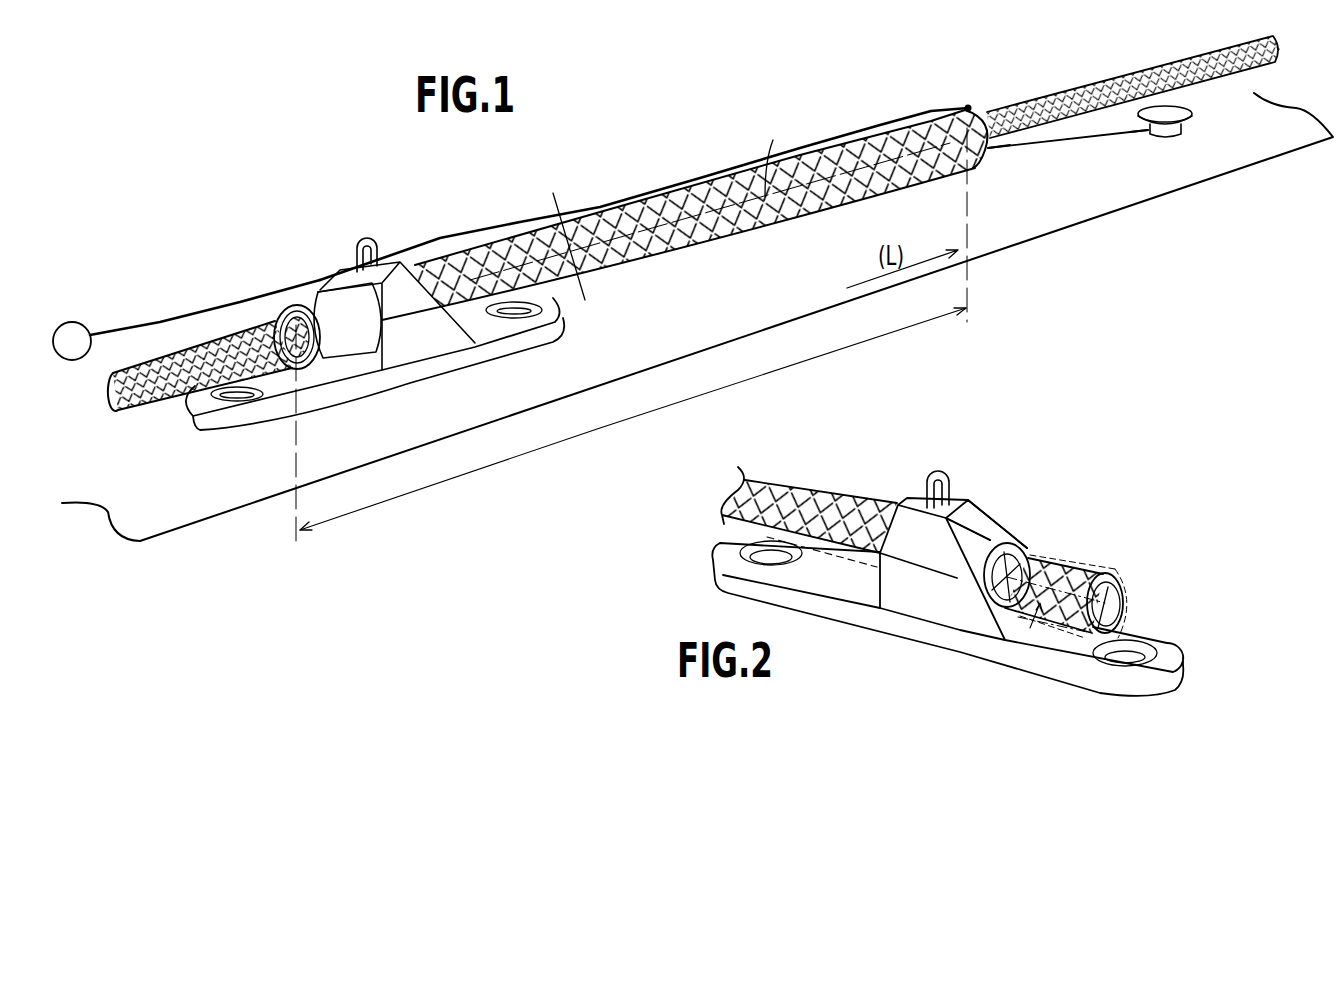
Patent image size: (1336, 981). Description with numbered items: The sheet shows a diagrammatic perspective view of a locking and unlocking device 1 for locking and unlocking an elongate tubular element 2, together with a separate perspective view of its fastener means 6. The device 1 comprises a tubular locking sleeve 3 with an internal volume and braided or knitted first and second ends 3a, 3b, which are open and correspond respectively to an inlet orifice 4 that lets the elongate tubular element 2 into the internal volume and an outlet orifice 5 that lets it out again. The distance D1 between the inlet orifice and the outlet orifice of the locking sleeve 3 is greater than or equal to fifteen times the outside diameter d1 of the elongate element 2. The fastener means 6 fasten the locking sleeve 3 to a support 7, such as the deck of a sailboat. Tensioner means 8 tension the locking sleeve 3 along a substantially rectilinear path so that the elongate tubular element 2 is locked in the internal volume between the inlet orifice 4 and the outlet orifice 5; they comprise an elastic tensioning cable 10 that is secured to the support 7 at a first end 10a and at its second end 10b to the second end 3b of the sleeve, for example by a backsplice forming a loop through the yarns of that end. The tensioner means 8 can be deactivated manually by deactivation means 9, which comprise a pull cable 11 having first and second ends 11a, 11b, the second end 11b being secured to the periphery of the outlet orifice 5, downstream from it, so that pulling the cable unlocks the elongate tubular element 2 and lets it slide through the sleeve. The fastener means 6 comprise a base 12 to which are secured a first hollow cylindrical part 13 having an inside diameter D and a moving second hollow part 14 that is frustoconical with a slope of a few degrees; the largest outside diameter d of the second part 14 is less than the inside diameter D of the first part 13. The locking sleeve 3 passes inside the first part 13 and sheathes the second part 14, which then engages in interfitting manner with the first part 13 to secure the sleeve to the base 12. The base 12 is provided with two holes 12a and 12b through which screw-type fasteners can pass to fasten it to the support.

In FIG. 1, the locking and unlocking device 1 is at (190, 452).
In FIG. 1, the elongate tubular element 2 is at (157, 400).
In FIG. 2, the elongate tubular element 2 is at (813, 479).
In FIG. 1, the tubular locking sleeve 3 is at (745, 218).
In FIG. 1, the first end of the locking sleeve 3a is at (270, 313).
In FIG. 1, the second end of the locking sleeve 3b is at (978, 135).
In FIG. 1, the inlet orifice 4 is at (403, 295).
In FIG. 1, the outlet orifice 5 is at (1022, 118).
In FIG. 1, the fastener means 6 is at (403, 345).
In FIG. 2, the fastener means 6 is at (944, 551).
In FIG. 1, the support 7 is at (821, 267).
In FIG. 1, the tensioner means 8 is at (1138, 135).
In FIG. 1, the deactivation means 9 is at (223, 302).
In FIG. 1, the elastic tensioning cable 10 is at (1100, 134).
In FIG. 1, the first end of the tensioning cable 10a is at (1195, 118).
In FIG. 1, the second end of the tensioning cable 10b is at (992, 150).
In FIG. 1, the pull cable 11 is at (503, 224).
In FIG. 1, the first end of the pull cable 11a is at (75, 340).
In FIG. 1, the second end of the pull cable 11b is at (968, 105).
In FIG. 2, the base 12 is at (933, 613).
In FIG. 2, the first hole 12a is at (748, 548).
In FIG. 2, the second hole 12b is at (1127, 650).
In FIG. 2, the first hollow cylindrical part 13 is at (993, 538).
In FIG. 2, the moving second hollow part 14 is at (1083, 582).
In FIG. 2, the inside diameter of the first part D is at (995, 578).
In FIG. 2, the largest outside diameter of the second part d is at (1127, 607).
In FIG. 1, the outside diameter of the elongate element d1 is at (569, 240).
In FIG. 1, the distance between the inlet orifice and the outlet orifice D1 is at (631, 338).